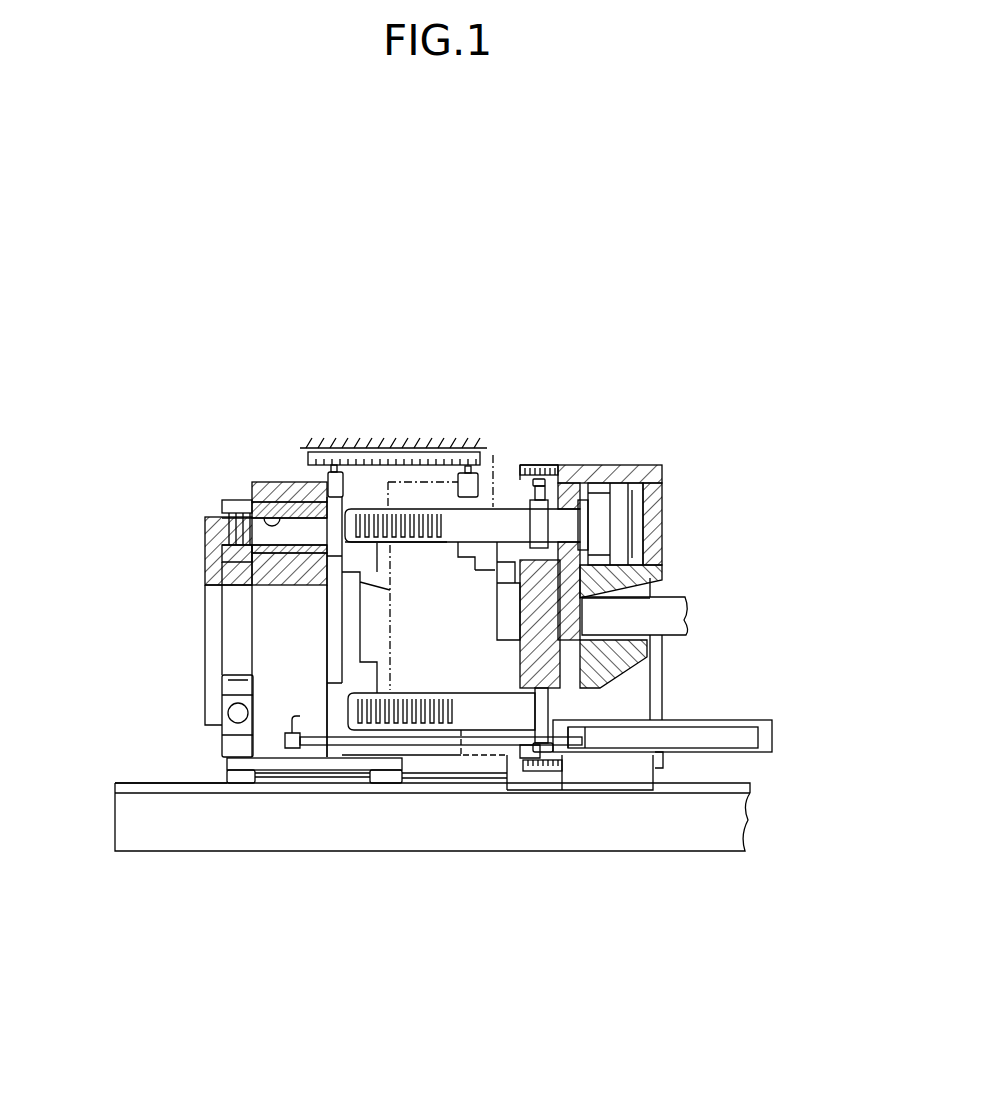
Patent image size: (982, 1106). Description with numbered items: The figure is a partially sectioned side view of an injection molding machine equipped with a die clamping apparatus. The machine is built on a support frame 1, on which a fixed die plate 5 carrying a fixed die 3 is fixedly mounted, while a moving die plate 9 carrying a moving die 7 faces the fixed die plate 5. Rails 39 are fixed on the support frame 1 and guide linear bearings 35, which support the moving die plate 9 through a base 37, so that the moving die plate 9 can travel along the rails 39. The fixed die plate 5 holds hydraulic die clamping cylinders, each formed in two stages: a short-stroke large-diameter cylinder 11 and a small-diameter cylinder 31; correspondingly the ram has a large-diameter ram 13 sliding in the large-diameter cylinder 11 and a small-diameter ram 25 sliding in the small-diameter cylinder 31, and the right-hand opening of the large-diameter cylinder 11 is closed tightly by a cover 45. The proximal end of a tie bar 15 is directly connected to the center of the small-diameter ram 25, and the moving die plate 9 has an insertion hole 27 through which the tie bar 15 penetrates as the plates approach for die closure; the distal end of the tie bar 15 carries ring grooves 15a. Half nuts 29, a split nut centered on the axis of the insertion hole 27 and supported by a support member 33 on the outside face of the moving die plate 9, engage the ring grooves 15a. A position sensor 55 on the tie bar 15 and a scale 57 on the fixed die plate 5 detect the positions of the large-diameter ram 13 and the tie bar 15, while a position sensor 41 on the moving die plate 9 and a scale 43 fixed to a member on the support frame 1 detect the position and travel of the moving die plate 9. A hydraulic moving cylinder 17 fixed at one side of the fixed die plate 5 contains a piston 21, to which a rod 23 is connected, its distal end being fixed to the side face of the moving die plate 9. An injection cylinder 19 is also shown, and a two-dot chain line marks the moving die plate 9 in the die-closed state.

The support frame 1 is at (730, 852).
The fixed die 3 is at (497, 552).
The fixed die plate 5 is at (635, 697).
The moving die 7 is at (375, 693).
The moving die plate 9 is at (258, 482).
The large-diameter cylinder 11 is at (647, 495).
The large-diameter ram 13 is at (645, 538).
The tie bar 15 is at (508, 540).
The ring grooves 15a is at (375, 543).
The moving cylinder 17 is at (745, 755).
The injection cylinder 19 is at (663, 638).
The piston 21 is at (588, 746).
The rod 23 is at (503, 790).
The small-diameter ram 25 is at (600, 545).
The insertion hole 27 is at (252, 503).
The half nuts 29 is at (220, 497).
The small-diameter cylinder 31 is at (580, 482).
The support member 33 is at (207, 605).
The linear bearings 35 is at (230, 784).
The base 37 is at (300, 784).
The rails 39 is at (153, 780).
The position sensor 41 is at (327, 476).
The scale 43 is at (378, 452).
The cover 45 is at (658, 513).
The position sensor 55 is at (560, 478).
The scale 57 is at (540, 478).